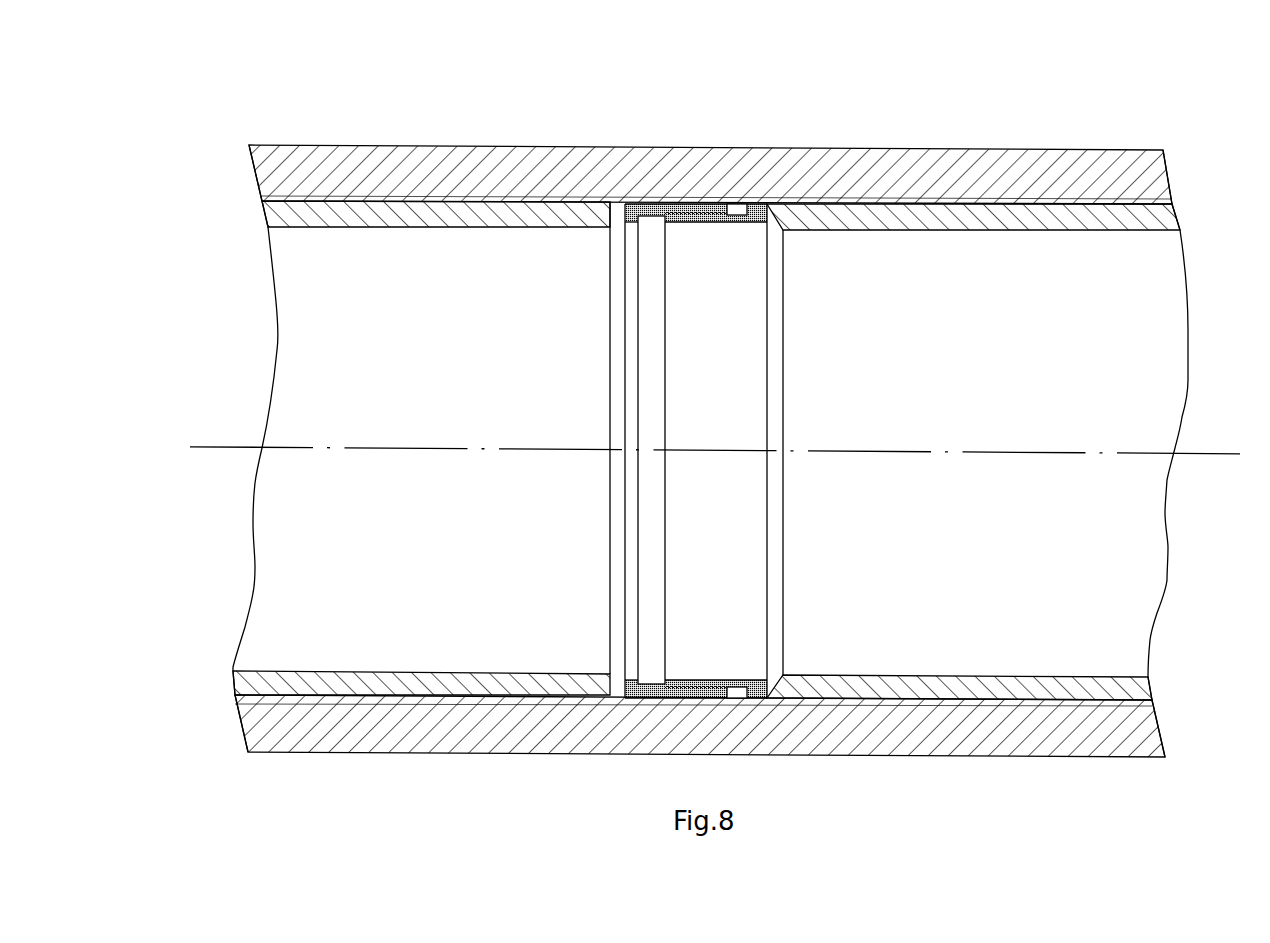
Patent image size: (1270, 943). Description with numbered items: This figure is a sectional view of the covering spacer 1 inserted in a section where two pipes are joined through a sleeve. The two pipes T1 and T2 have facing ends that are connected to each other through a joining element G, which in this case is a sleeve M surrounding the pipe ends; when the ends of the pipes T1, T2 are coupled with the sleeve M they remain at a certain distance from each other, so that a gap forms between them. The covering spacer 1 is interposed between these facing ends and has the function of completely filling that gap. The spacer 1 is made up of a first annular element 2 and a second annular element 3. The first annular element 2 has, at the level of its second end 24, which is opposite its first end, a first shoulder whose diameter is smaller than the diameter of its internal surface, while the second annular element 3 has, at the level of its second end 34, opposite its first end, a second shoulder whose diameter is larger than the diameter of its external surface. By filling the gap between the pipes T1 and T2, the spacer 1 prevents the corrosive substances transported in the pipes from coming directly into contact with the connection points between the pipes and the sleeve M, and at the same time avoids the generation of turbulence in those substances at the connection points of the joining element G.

The covering spacer 1 is at (708, 173).
The first annular element 2 is at (650, 239).
The second annular element 3 is at (725, 238).
The second end of the first annular element 24 is at (623, 229).
The second end of the second annular element 34 is at (773, 234).
The sleeve M is at (703, 387).
The joining element G is at (694, 387).
The pipe T1 is at (303, 215).
The pipe T2 is at (1158, 220).